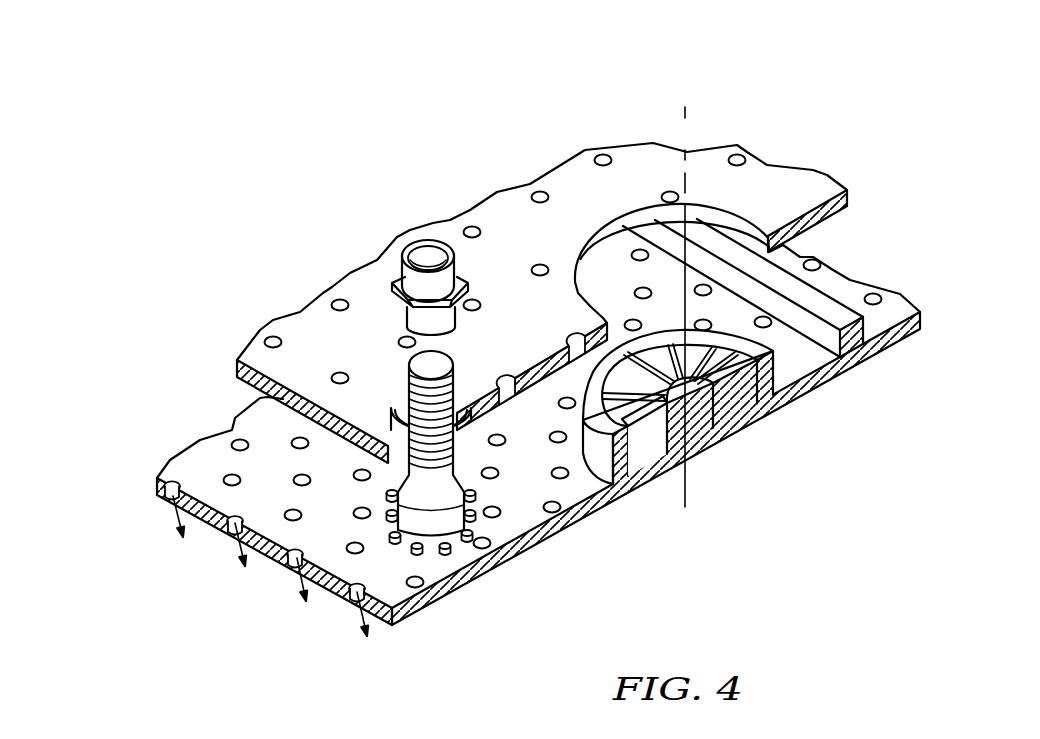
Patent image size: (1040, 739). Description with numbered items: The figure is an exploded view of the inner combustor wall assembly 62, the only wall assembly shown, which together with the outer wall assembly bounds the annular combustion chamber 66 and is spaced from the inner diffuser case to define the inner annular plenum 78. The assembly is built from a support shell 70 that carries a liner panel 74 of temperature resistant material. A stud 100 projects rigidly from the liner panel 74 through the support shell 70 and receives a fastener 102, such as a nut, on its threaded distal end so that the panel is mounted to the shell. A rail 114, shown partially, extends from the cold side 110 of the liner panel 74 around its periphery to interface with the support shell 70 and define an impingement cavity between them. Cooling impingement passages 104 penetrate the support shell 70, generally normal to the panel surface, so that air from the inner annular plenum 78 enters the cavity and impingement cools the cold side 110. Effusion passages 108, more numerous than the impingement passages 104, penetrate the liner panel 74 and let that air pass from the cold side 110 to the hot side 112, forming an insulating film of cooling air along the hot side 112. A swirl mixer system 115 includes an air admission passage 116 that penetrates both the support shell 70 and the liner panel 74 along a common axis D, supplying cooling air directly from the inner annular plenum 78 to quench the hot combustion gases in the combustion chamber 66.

The inner combustor wall assembly 62 is at (966, 117).
The annular combustion chamber 66 is at (785, 594).
The support shell 70 is at (826, 146).
The liner panel 74 is at (956, 302).
The inner annular plenum 78 is at (323, 210).
The stud 100 is at (420, 372).
The fastener 102 is at (441, 242).
The cooling impingement passage 104 is at (540, 191).
The effusion passage 108 is at (874, 293).
The cold side 110 is at (510, 523).
The hot side 112 is at (478, 565).
The rail 114 is at (887, 333).
The swirl mixer system 115 is at (804, 408).
The air admission passage 116 is at (729, 448).
The common axis D is at (687, 116).